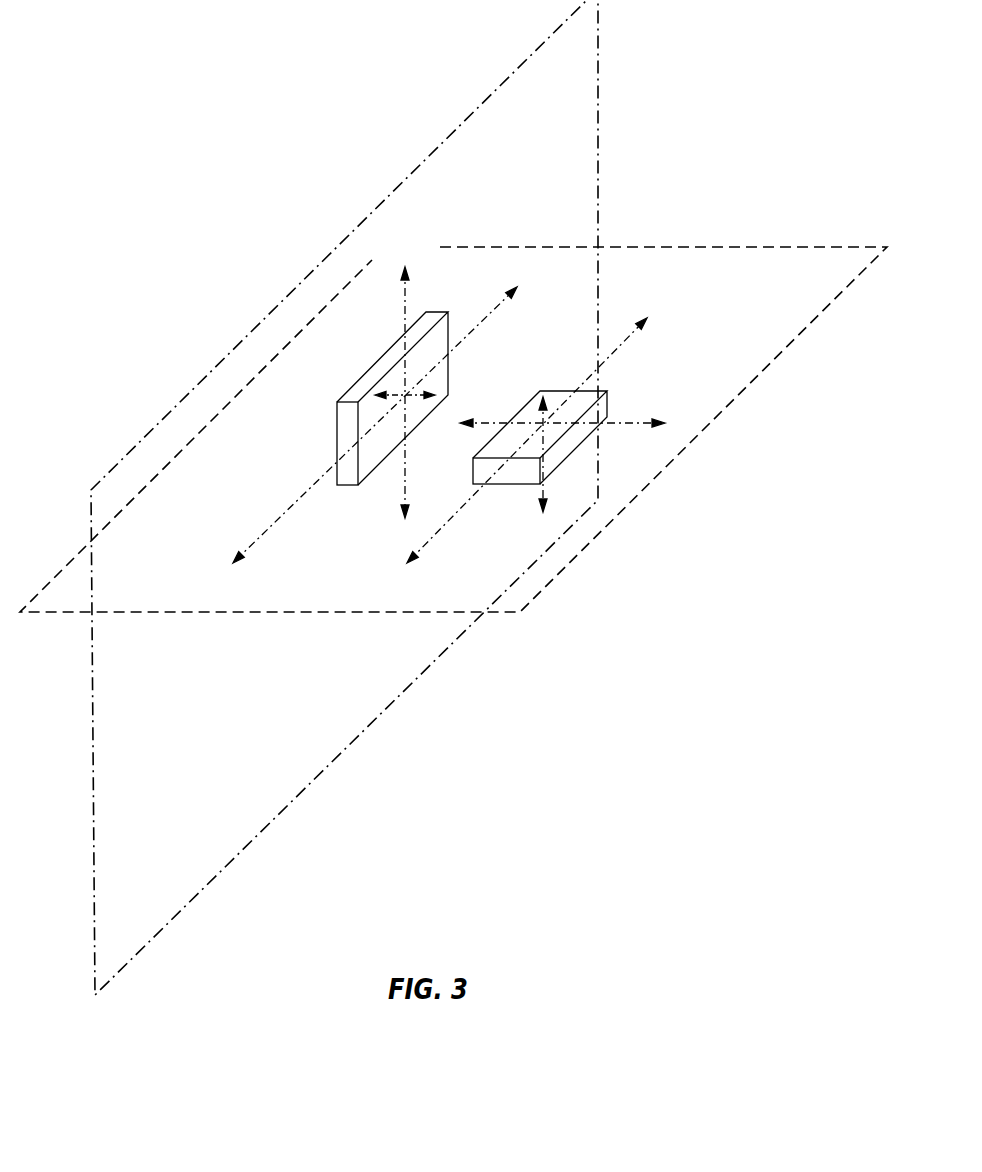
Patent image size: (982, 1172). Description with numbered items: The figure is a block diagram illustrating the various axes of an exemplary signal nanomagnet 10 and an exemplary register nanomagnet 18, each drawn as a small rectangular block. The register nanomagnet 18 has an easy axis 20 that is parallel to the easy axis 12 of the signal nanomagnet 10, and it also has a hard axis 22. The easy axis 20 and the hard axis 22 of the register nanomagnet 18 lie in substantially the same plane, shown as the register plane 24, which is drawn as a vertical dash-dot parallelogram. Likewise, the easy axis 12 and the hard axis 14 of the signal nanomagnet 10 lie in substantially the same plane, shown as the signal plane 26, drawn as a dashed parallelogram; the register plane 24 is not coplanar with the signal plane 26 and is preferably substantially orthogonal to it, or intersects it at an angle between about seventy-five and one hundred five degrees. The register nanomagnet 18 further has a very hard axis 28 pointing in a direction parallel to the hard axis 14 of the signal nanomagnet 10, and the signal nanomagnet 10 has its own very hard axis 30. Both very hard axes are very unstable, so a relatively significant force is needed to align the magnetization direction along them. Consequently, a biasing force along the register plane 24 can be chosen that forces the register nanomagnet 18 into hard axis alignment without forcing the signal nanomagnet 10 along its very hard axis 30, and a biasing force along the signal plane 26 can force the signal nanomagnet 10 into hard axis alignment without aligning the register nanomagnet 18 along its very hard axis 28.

The signal nanomagnet 10 is at (606, 401).
The easy axis 12 is at (630, 343).
The hard axis 14 is at (635, 424).
The register nanomagnet 18 is at (451, 371).
The easy axis 20 is at (496, 308).
The hard axis 22 is at (405, 296).
The register plane 24 is at (598, 96).
The signal plane 26 is at (822, 311).
The very hard axis 28 is at (415, 398).
The very hard axis 30 is at (543, 440).